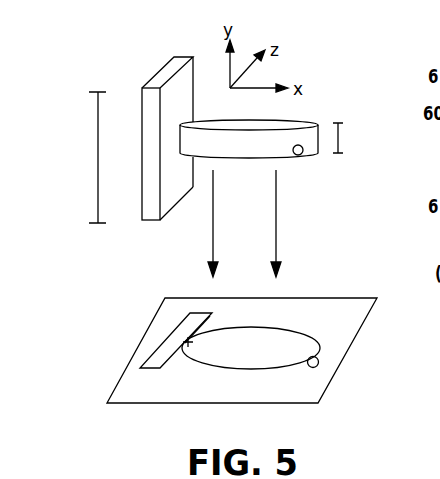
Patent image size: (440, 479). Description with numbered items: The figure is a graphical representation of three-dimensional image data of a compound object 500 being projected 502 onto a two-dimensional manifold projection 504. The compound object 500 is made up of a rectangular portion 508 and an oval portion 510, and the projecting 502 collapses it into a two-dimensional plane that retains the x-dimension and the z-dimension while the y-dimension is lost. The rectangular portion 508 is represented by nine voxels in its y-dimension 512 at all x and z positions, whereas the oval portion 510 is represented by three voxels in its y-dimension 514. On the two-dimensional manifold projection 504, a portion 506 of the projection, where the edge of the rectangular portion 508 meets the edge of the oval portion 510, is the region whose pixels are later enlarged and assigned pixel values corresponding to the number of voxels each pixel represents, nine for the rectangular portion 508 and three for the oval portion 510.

The compound object 500 is at (142, 77).
The projection 502 is at (276, 228).
The two-dimensional manifold projection 504 is at (150, 323).
The portion of two-dimensional manifold projection 506 is at (183, 344).
The rectangular portion 508 is at (149, 358).
The oval portion 510 is at (220, 369).
The y-dimension of rectangular portion 512 is at (88, 170).
The y-dimension of oval portion 514 is at (360, 147).